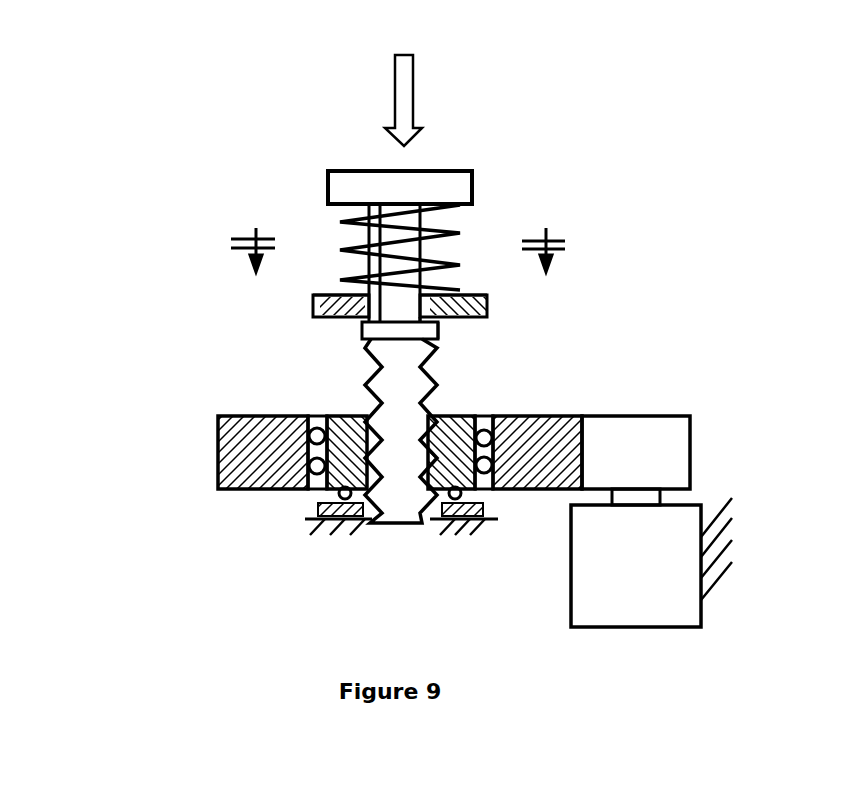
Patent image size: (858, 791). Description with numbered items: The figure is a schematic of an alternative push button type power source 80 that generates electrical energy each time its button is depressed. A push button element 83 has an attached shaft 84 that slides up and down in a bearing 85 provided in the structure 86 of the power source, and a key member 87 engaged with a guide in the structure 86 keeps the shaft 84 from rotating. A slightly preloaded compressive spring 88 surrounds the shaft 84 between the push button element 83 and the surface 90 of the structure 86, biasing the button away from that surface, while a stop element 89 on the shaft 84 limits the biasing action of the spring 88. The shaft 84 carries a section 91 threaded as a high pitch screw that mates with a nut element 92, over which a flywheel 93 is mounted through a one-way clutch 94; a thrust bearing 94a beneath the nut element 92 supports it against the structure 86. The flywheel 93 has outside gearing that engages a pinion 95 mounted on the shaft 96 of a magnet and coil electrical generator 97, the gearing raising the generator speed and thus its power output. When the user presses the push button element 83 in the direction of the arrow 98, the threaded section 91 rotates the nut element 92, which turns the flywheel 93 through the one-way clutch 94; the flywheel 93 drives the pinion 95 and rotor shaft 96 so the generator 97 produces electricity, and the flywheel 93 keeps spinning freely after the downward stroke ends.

The alternative design of the power source 80 is at (705, 158).
The push button element 83 is at (396, 188).
The shaft 84 is at (395, 230).
The bearing 85 is at (426, 308).
The structure 86 is at (325, 305).
The key member 87 is at (372, 231).
The compressive spring 88 is at (460, 265).
The stop element 89 is at (394, 328).
The surface of the structure 90 is at (335, 294).
The threaded section 91 is at (399, 376).
The nut element 92 is at (450, 447).
The flywheel 93 is at (243, 473).
The one-way clutch 94 is at (318, 450).
The thrust bearing 94a is at (317, 500).
The pinion 95 is at (650, 449).
The shaft of the electrical generator 96 is at (638, 497).
The magnet and coil electrical generator 97 is at (649, 570).
The arrow 98 is at (392, 100).